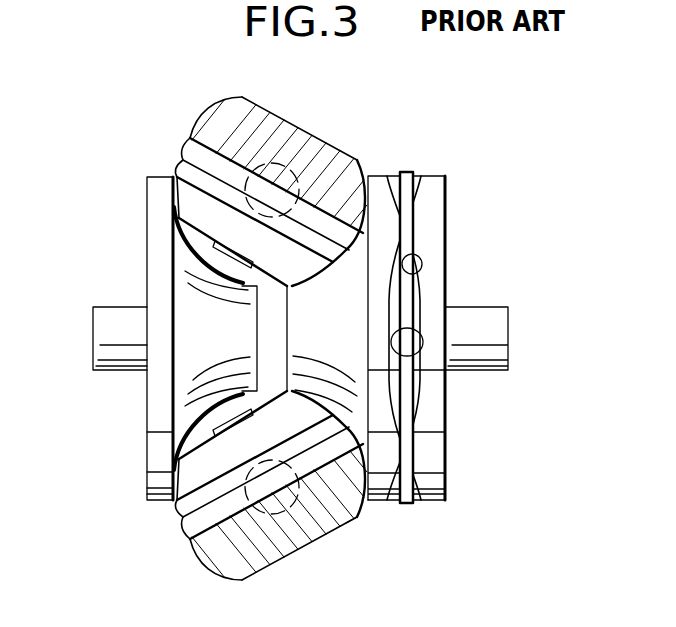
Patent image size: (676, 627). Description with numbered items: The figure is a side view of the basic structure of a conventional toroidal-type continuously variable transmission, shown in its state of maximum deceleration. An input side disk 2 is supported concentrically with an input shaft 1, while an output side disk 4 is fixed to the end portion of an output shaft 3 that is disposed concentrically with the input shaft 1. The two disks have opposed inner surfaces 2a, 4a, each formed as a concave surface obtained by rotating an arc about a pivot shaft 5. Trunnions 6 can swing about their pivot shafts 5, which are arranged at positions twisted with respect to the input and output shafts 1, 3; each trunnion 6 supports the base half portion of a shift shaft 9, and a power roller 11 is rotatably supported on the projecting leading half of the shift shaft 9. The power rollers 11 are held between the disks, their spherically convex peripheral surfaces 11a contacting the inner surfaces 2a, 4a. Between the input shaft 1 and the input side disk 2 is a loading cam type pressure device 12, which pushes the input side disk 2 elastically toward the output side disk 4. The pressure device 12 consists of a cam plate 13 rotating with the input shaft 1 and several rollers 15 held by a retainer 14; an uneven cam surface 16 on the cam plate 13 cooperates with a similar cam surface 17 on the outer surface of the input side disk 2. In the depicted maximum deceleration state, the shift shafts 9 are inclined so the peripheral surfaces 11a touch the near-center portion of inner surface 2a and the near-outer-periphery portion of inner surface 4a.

The input shaft 1 is at (500, 335).
The input side disk 2 is at (383, 210).
The inner surface of input side disk 2a is at (353, 518).
The output shaft 3 is at (100, 335).
The output side disk 4 is at (155, 222).
The inner surface of output side disk 4a is at (243, 268).
The pivot shaft 5 is at (290, 122).
The trunnion 6 is at (213, 118).
The shift shaft 9 is at (197, 261).
The power roller 11 is at (181, 175).
The peripheral surface of power roller 11a is at (182, 190).
The pressure device 12 is at (455, 336).
The cam plate 13 is at (438, 223).
The retainer 14 is at (408, 172).
The roller 15 is at (386, 178).
The cam surface 16 is at (406, 253).
The cam surface 17 is at (390, 392).